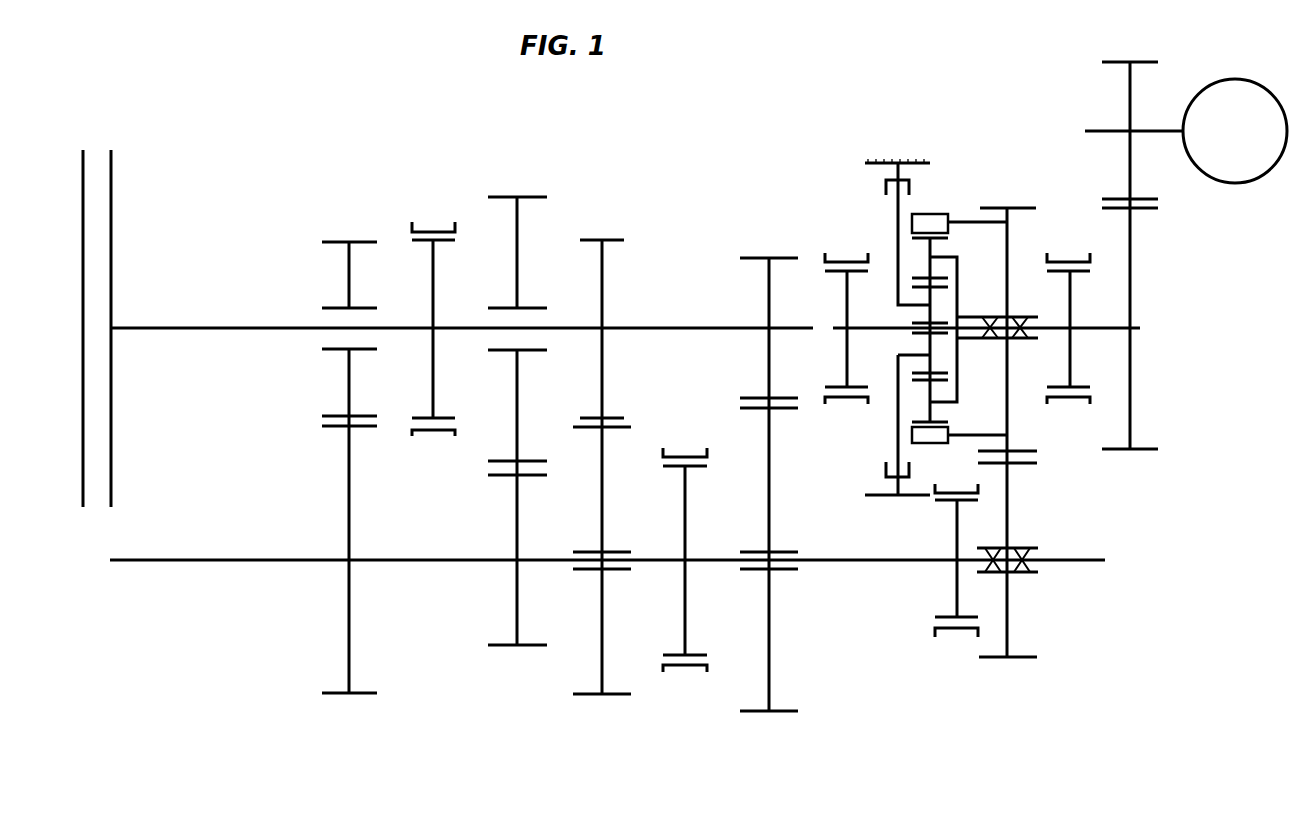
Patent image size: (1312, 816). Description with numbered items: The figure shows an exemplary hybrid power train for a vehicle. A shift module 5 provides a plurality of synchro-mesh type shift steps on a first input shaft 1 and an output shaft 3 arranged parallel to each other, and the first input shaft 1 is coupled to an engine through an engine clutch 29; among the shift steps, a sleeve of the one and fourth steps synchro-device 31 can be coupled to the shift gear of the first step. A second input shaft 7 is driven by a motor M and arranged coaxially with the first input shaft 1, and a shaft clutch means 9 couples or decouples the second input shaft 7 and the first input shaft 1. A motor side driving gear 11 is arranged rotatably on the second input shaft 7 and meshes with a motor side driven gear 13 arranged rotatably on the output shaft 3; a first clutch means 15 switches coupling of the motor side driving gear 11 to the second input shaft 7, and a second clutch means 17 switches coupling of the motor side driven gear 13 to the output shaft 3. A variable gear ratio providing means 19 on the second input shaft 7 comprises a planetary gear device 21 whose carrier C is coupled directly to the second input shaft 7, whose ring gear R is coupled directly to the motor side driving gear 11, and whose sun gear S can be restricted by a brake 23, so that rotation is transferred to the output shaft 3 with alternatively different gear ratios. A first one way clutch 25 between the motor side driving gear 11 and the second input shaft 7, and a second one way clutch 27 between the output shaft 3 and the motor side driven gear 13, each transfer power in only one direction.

The first input shaft 1 is at (205, 327).
The output shaft 3 is at (250, 560).
The shift module 5 is at (803, 740).
The second input shaft 7 is at (1140, 330).
The shaft clutch means 9 is at (838, 246).
The motor side driving gear 11 is at (1019, 207).
The motor side driven gear 13 is at (1020, 660).
The first clutch means 15 is at (1088, 290).
The second clutch means 17 is at (946, 538).
The variable gear ratio providing means 19 is at (879, 294).
The planetary gear device 21 is at (882, 236).
The brake 23 is at (882, 187).
The first one way clutch 25 is at (1046, 336).
The second one way clutch 27 is at (1047, 546).
The engine clutch 29 is at (95, 140).
The 1 & 4th steps synchro-device 31 is at (430, 216).
The ring gear R is at (936, 220).
The carrier C is at (962, 275).
The sun gear S is at (920, 283).
The motor M is at (1186, 255).